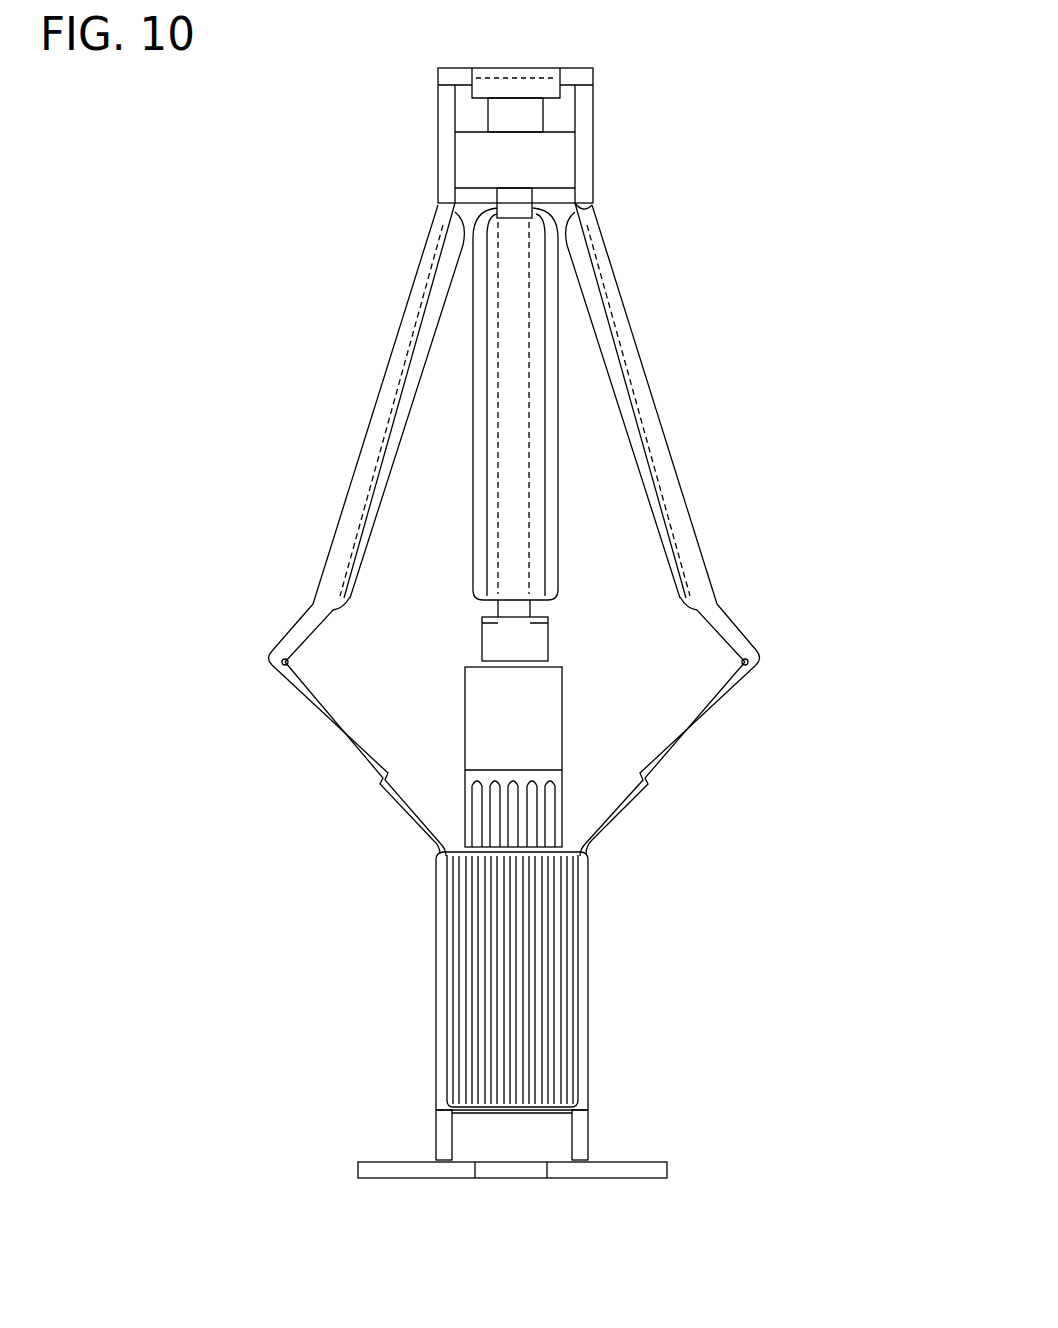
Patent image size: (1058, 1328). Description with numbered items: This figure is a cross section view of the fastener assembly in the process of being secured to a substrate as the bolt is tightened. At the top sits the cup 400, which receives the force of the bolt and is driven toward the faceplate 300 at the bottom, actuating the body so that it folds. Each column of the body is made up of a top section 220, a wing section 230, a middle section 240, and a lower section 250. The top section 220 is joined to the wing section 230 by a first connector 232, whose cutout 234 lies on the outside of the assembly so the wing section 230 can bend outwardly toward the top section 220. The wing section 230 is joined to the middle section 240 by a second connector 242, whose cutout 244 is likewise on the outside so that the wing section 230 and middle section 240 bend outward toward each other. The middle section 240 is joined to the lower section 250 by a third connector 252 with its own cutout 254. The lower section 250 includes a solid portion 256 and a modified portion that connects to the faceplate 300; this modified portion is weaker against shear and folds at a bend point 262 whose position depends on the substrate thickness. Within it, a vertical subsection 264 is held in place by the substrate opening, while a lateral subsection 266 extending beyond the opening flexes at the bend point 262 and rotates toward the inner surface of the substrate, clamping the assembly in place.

The top section 220 is at (587, 140).
The cup 400 is at (440, 80).
The wing section 230 is at (632, 332).
The first connector 232 is at (592, 203).
The cutout 234 is at (438, 205).
The cutout 244 is at (318, 605).
The middle section 240 is at (728, 637).
The second connector 242 is at (515, 608).
The third connector 252 is at (532, 662).
The cutout 254 is at (288, 664).
The solid portion 256 is at (326, 717).
The lower section 250 is at (313, 1135).
The lateral subsection 266 is at (412, 793).
The bend point 262 is at (578, 847).
The vertical subsection 264 is at (442, 930).
The faceplate 300 is at (617, 1170).